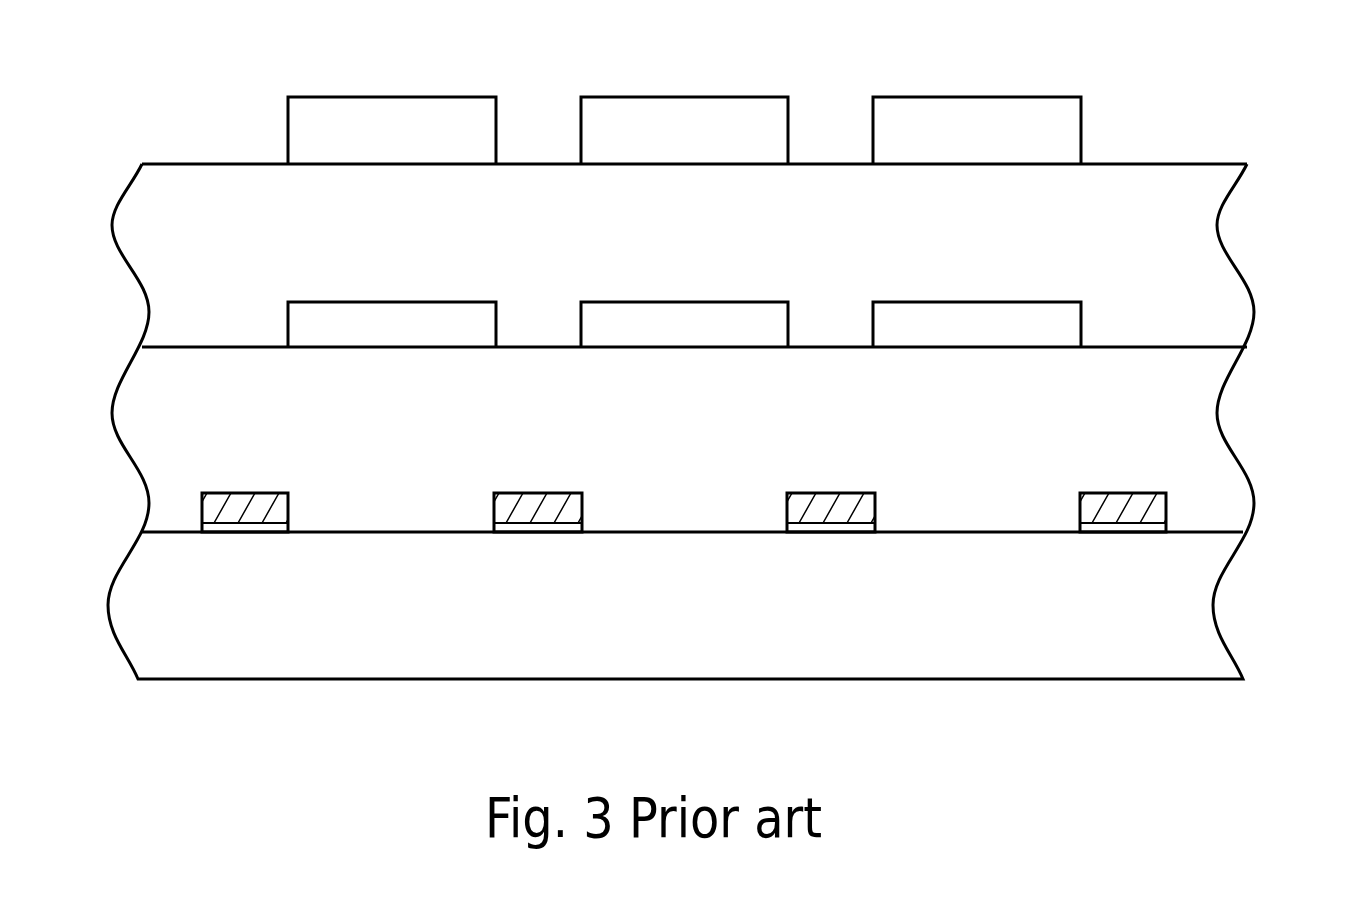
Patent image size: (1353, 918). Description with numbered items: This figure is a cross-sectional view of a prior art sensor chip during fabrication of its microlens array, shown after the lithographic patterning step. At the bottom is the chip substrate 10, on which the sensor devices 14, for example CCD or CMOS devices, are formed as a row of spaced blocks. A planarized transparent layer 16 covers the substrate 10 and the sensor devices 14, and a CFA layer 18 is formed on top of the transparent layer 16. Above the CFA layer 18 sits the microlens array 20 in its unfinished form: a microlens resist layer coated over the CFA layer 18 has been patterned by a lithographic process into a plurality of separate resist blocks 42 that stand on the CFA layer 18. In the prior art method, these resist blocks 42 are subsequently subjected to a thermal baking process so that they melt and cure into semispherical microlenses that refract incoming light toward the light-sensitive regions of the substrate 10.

The chip substrate 10 is at (707, 627).
The sensor devices 14 is at (1175, 504).
The planarized transparent layer 16 is at (708, 433).
The CFA layer 18 is at (1065, 327).
The microlens array 20 is at (777, 91).
The resist blocks 42 is at (408, 145).